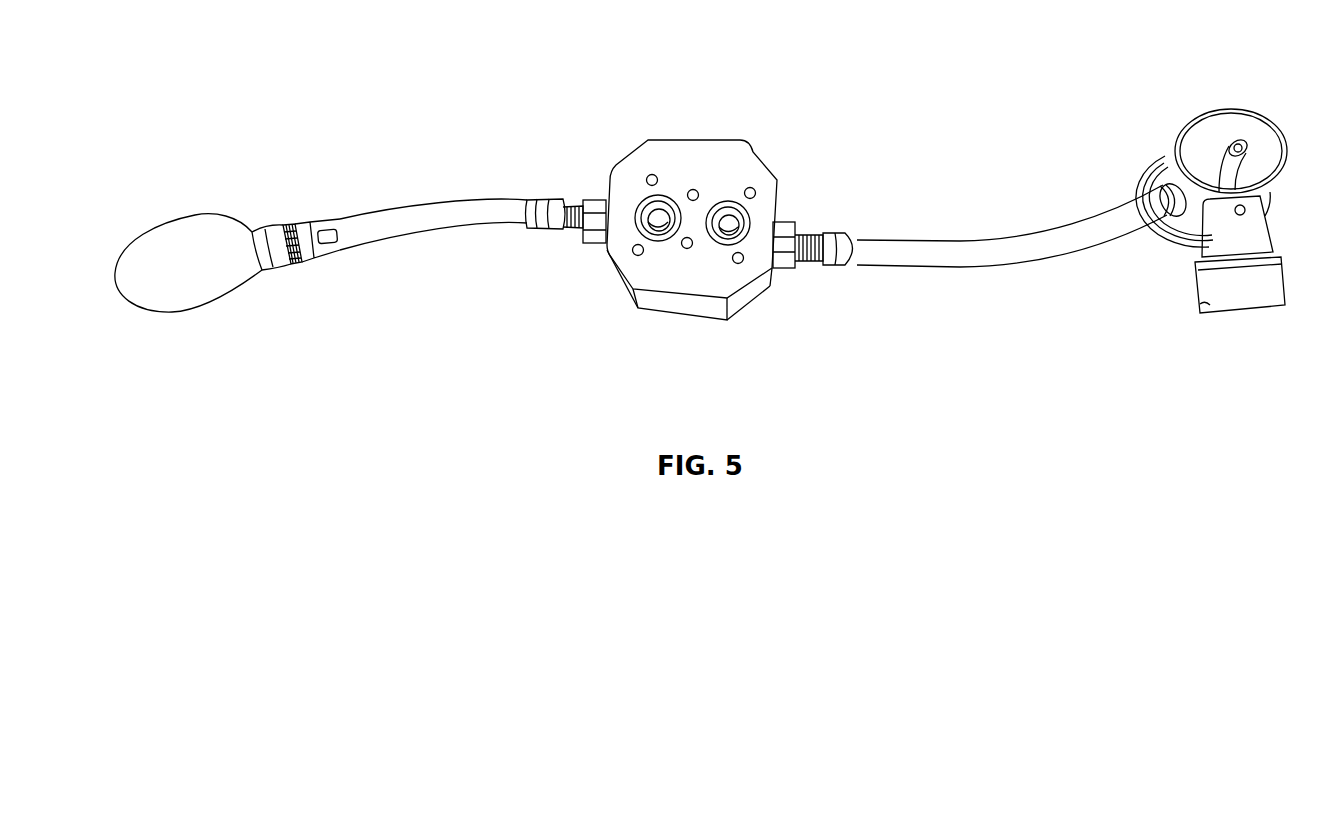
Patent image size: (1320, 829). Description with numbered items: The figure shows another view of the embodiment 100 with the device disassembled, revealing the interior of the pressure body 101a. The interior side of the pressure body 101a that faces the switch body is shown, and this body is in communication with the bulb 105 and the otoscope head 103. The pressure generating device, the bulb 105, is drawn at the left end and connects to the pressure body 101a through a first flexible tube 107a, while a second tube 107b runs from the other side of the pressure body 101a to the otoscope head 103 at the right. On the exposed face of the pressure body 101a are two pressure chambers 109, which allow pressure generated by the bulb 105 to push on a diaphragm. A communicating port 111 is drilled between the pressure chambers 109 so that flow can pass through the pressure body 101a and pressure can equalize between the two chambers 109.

The embodiment 100 is at (213, 50).
The pressure body 101a is at (607, 167).
The otoscope head 103 is at (1247, 318).
The pressure generating device 105 is at (202, 327).
The first tube 107a is at (429, 238).
The second tube 107b is at (1007, 275).
The pressure chambers 109 is at (725, 198).
The communicating port 111 is at (694, 230).